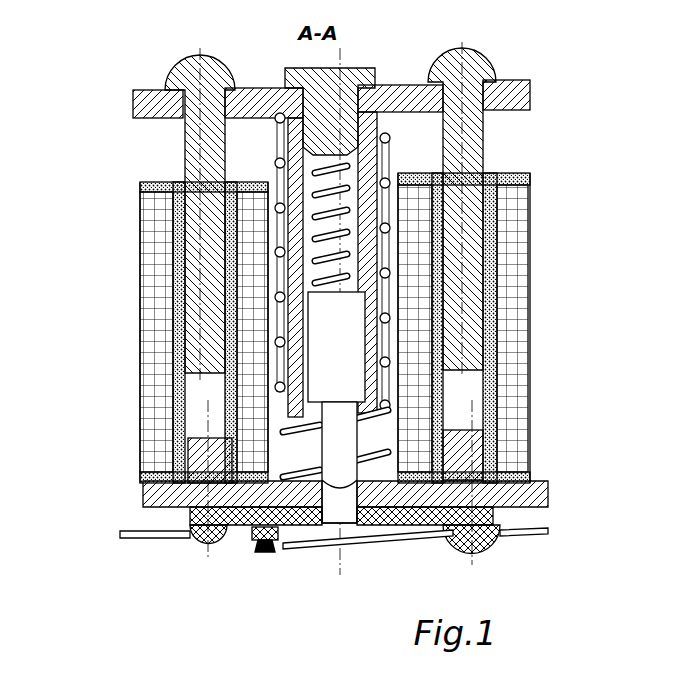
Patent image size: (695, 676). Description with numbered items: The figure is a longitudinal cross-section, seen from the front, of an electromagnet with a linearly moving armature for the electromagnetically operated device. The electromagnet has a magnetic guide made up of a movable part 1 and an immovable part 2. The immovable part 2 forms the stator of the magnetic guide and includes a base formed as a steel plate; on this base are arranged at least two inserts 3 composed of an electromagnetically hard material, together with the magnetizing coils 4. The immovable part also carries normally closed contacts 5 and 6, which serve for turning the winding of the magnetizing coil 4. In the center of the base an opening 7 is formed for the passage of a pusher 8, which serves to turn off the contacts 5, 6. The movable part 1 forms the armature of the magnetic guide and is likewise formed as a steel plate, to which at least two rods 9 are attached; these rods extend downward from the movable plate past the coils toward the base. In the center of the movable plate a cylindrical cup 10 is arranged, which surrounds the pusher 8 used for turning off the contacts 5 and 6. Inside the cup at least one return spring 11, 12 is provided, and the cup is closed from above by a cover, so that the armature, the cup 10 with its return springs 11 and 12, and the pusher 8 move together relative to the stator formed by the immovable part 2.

The movable part 1 is at (527, 92).
The immovable part 2 is at (545, 500).
The insert 3 is at (188, 462).
The magnetizing coil 4 is at (522, 205).
The normally closed contact 5 is at (540, 533).
The normally closed contact 6 is at (125, 535).
The opening 7 is at (273, 543).
The pusher 8 is at (347, 338).
The rod 9 is at (187, 79).
The cylindrical cup 10 is at (377, 305).
The return spring 11 is at (283, 296).
The return spring 12 is at (356, 246).